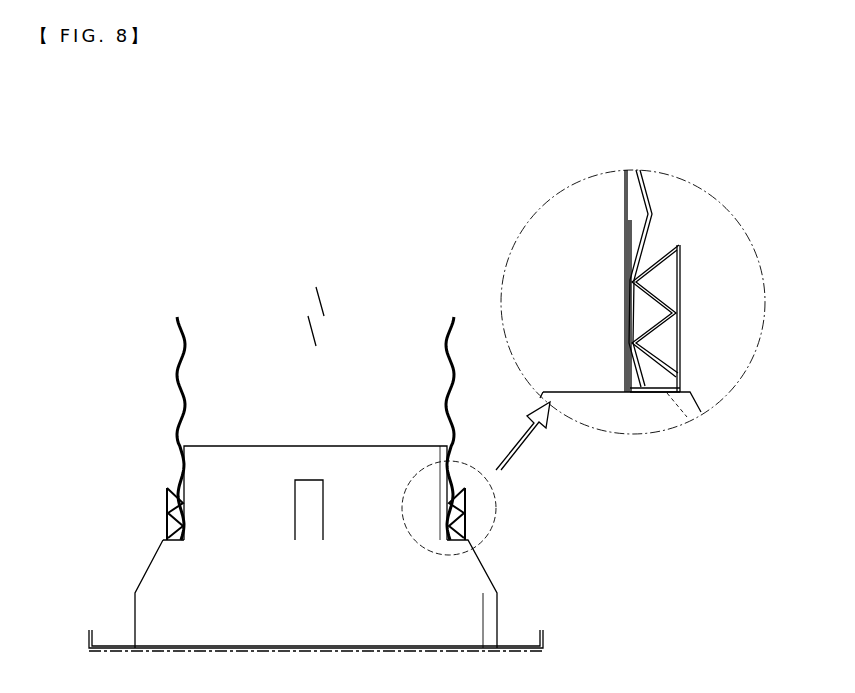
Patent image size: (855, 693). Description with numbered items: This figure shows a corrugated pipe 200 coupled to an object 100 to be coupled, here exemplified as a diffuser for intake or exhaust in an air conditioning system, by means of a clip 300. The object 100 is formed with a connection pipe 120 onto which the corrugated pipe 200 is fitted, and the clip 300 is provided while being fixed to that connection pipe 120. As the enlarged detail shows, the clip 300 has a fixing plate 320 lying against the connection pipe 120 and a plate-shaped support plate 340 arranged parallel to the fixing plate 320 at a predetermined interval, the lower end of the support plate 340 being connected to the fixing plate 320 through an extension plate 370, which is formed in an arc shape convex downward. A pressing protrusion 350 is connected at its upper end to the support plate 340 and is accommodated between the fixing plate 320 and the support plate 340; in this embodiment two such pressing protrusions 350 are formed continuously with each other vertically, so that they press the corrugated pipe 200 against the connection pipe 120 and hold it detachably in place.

The object to be coupled 100 is at (152, 572).
The connection pipe 120 is at (192, 473).
The corrugated pipe 200 is at (178, 367).
The clip 300 is at (167, 520).
The fixing plate 320 is at (630, 242).
The support plate 340 is at (681, 273).
The pressing protrusion 350 is at (640, 340).
The extension plate 370 is at (662, 393).